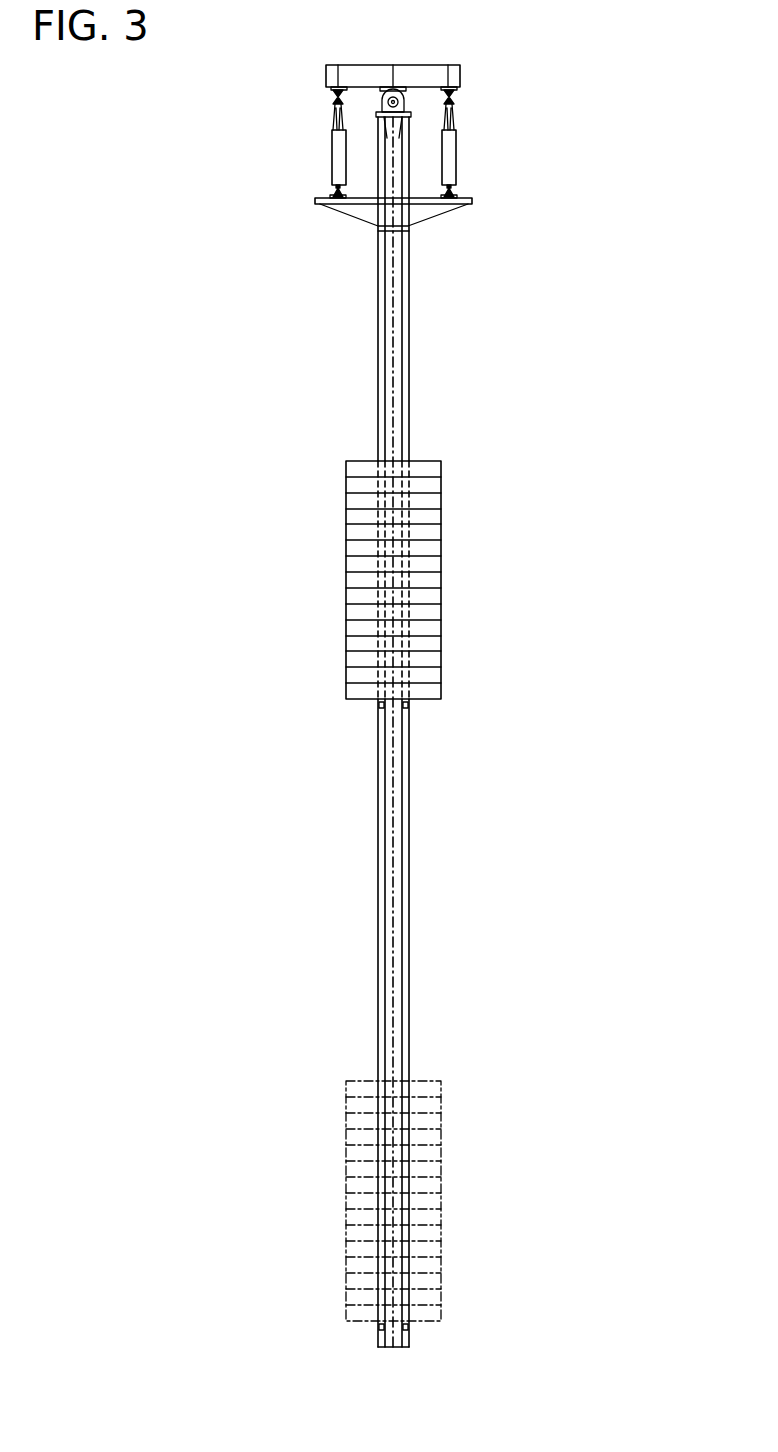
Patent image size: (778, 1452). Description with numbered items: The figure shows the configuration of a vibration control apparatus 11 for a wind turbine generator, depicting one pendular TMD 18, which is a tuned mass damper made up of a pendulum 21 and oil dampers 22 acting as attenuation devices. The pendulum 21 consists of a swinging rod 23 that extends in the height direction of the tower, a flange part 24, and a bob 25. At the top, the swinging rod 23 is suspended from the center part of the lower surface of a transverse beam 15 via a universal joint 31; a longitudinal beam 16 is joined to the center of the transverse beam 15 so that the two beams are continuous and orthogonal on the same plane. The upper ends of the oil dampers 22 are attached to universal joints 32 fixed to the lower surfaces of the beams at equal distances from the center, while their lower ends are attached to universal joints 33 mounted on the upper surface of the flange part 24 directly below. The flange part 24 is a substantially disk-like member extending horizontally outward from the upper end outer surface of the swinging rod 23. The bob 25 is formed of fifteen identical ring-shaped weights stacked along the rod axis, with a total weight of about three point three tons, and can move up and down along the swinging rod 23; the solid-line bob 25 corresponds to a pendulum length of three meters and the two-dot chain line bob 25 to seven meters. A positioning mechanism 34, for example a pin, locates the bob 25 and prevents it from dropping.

The vibration control apparatus 11 is at (187, 148).
The transverse beam 15 is at (395, 72).
The longitudinal beam 16 is at (458, 72).
The pendular TMD 18 is at (547, 117).
The pendulum 21 is at (410, 410).
The oil damper 22 is at (332, 152).
The swinging rod 23 is at (381, 372).
The flange part 24 is at (437, 213).
The bob 25 is at (432, 548).
The universal joint 31 is at (381, 107).
The universal joint 32 is at (333, 94).
The universal joint 33 is at (323, 194).
The positioning mechanism 34 is at (408, 705).